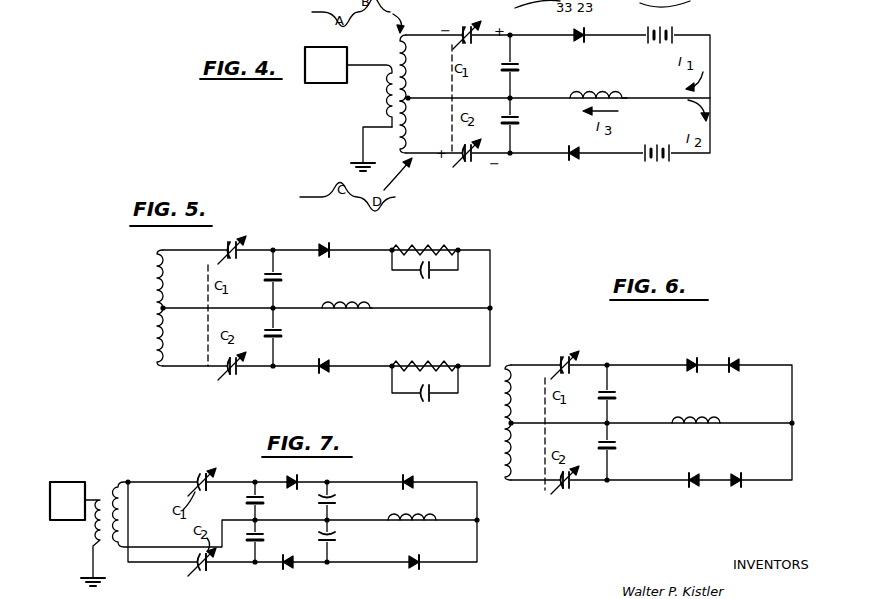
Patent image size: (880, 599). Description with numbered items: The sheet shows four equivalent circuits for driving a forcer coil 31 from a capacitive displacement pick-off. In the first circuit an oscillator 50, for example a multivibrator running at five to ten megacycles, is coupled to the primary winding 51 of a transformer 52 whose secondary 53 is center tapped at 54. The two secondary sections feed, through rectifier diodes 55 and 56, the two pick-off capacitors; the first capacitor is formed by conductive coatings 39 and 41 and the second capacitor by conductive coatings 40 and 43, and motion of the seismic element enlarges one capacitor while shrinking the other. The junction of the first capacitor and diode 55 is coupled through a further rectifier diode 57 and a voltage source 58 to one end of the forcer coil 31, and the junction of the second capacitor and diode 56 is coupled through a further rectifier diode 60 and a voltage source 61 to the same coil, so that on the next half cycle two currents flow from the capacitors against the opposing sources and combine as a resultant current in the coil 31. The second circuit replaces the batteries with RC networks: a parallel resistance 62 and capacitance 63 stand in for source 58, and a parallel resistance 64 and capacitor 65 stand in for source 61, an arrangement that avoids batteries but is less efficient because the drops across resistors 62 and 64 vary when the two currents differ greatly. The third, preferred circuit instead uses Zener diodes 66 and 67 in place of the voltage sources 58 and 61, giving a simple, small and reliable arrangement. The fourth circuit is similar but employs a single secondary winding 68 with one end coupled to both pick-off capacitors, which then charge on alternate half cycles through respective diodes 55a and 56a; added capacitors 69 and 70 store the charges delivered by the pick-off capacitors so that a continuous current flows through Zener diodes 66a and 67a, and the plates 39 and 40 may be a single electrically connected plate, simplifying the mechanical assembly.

In FIG. 4, the forcer coil 31 is at (590, 90).
In FIG. 5, the forcer coil 31 is at (349, 300).
In FIG. 6, the forcer coil 31 is at (706, 416).
In FIG. 7, the forcer coil 31 is at (418, 514).
In FIG. 4, the conductive coating 39 is at (472, 46).
In FIG. 5, the conductive coating 39 is at (238, 260).
In FIG. 6, the conductive coating 39 is at (571, 352).
In FIG. 7, the conductive coating 39 is at (198, 478).
In FIG. 4, the conductive coating 40 is at (473, 164).
In FIG. 5, the conductive coating 40 is at (240, 376).
In FIG. 6, the conductive coating 40 is at (572, 488).
In FIG. 7, the conductive coating 40 is at (190, 573).
In FIG. 4, the conductive coating 41 is at (458, 32).
In FIG. 5, the conductive coating 41 is at (228, 244).
In FIG. 6, the conductive coating 41 is at (556, 360).
In FIG. 7, the conductive coating 41 is at (208, 490).
In FIG. 4, the conductive coating 43 is at (458, 164).
In FIG. 5, the conductive coating 43 is at (220, 385).
In FIG. 6, the conductive coating 43 is at (550, 494).
In FIG. 7, the conductive coating 43 is at (209, 571).
In FIG. 4, the oscillator 50 is at (316, 84).
In FIG. 7, the oscillator 50 is at (88, 482).
In FIG. 4, the primary winding 51 is at (382, 96).
In FIG. 4, the transformer 52 is at (391, 129).
In FIG. 4, the secondary 53 is at (404, 82).
In FIG. 4, the center tap 54 is at (409, 105).
In FIG. 4, the rectifier diode 55 is at (515, 70).
In FIG. 5, the rectifier diode 55 is at (282, 278).
In FIG. 6, the rectifier diode 55 is at (610, 402).
In FIG. 4, the rectifier diode 56 is at (516, 124).
In FIG. 5, the rectifier diode 56 is at (282, 335).
In FIG. 6, the rectifier diode 56 is at (614, 449).
In FIG. 4, the rectifier diode 57 is at (578, 42).
In FIG. 5, the rectifier diode 57 is at (332, 256).
In FIG. 6, the rectifier diode 57 is at (690, 372).
In FIG. 4, the voltage source 58 is at (664, 45).
In FIG. 4, the rectifier diode 60 is at (575, 158).
In FIG. 5, the rectifier diode 60 is at (331, 361).
In FIG. 6, the rectifier diode 60 is at (694, 472).
In FIG. 4, the voltage source 61 is at (668, 143).
In FIG. 5, the resistance 62 is at (437, 246).
In FIG. 5, the capacitance 63 is at (420, 276).
In FIG. 5, the resistance 64 is at (437, 360).
In FIG. 5, the capacitor 65 is at (430, 400).
In FIG. 6, the Zener diode 66 is at (735, 358).
In FIG. 6, the Zener diode 67 is at (741, 475).
In FIG. 7, the secondary winding 68 is at (120, 486).
In FIG. 7, the capacitor 69 is at (333, 503).
In FIG. 7, the capacitor 70 is at (340, 540).
In FIG. 7, the diode 55a is at (265, 501).
In FIG. 7, the diode 56a is at (263, 539).
In FIG. 7, the Zener diode 66a is at (411, 478).
In FIG. 7, the Zener diode 67a is at (412, 566).